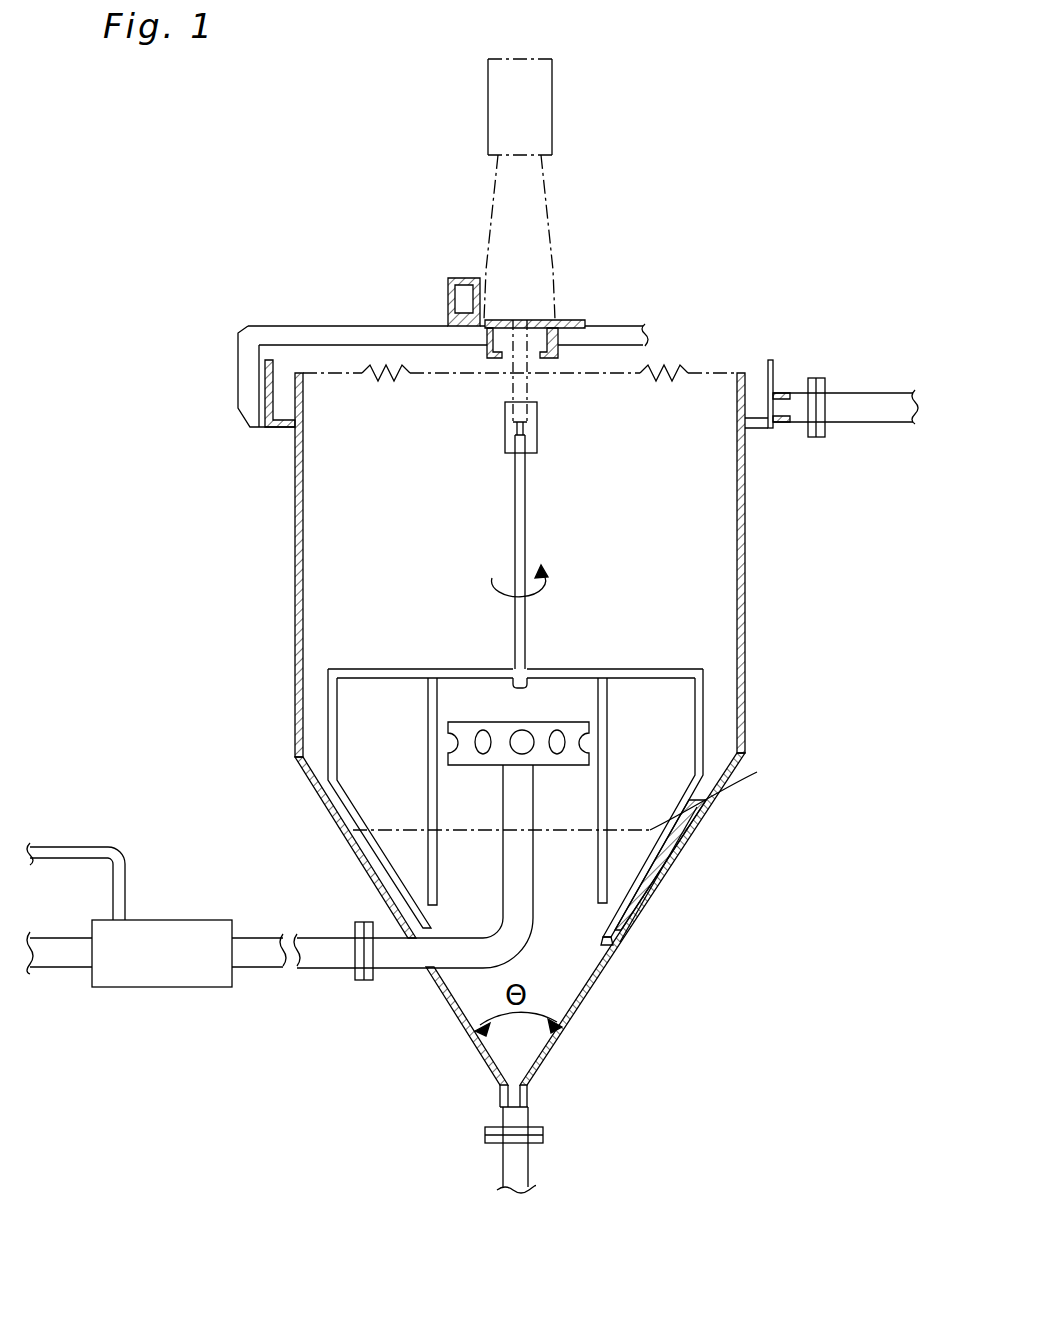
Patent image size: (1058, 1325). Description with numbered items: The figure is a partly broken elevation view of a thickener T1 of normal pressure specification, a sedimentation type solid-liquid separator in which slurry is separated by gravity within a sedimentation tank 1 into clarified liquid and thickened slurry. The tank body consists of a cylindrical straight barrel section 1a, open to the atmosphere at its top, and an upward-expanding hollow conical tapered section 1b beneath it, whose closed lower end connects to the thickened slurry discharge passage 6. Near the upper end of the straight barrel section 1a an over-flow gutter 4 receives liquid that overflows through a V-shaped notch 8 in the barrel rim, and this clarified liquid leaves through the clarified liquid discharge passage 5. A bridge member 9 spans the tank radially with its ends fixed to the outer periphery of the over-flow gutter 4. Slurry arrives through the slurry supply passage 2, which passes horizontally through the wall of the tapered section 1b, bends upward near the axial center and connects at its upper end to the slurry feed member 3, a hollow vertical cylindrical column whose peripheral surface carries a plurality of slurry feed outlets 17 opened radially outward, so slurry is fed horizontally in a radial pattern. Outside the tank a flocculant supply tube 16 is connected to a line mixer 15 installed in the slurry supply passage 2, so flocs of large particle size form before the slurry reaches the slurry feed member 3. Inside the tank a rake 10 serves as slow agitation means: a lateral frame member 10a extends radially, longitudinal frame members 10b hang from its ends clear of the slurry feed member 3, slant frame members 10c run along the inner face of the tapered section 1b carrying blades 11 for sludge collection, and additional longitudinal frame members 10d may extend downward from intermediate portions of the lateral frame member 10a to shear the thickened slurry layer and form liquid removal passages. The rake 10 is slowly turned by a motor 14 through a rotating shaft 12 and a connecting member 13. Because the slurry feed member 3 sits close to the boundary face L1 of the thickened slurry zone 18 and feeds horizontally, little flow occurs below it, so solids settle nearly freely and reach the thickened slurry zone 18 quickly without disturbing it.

The sedimentation tank 1 is at (411, 736).
The straight barrel section 1a is at (293, 598).
The tapered section 1b is at (307, 788).
The slurry supply passage 2 is at (395, 985).
The slurry feed member 3 is at (636, 671).
The over-flow gutter 4 is at (768, 362).
The clarified liquid discharge passage 5 is at (797, 432).
The thickened slurry discharge passage 6 is at (522, 1118).
The notch 8 is at (363, 383).
The bridge member 9 is at (423, 326).
The rake 10 is at (607, 803).
The lateral frame member 10a is at (407, 668).
The longitudinal frame members 10b is at (703, 738).
The slant frame members 10c is at (658, 858).
The longitudinal frame members 10d is at (655, 888).
The blades 11 is at (632, 917).
The rotating shaft 12 is at (515, 556).
The connecting member 13 is at (537, 442).
The motor 14 is at (550, 226).
The line mixer 15 is at (167, 987).
The flocculant supply tube 16 is at (63, 843).
The slurry feed outlets 17 is at (520, 730).
The thickened slurry zone 18 is at (578, 952).
The thickener T1 is at (165, 396).
The boundary face L1 is at (763, 770).